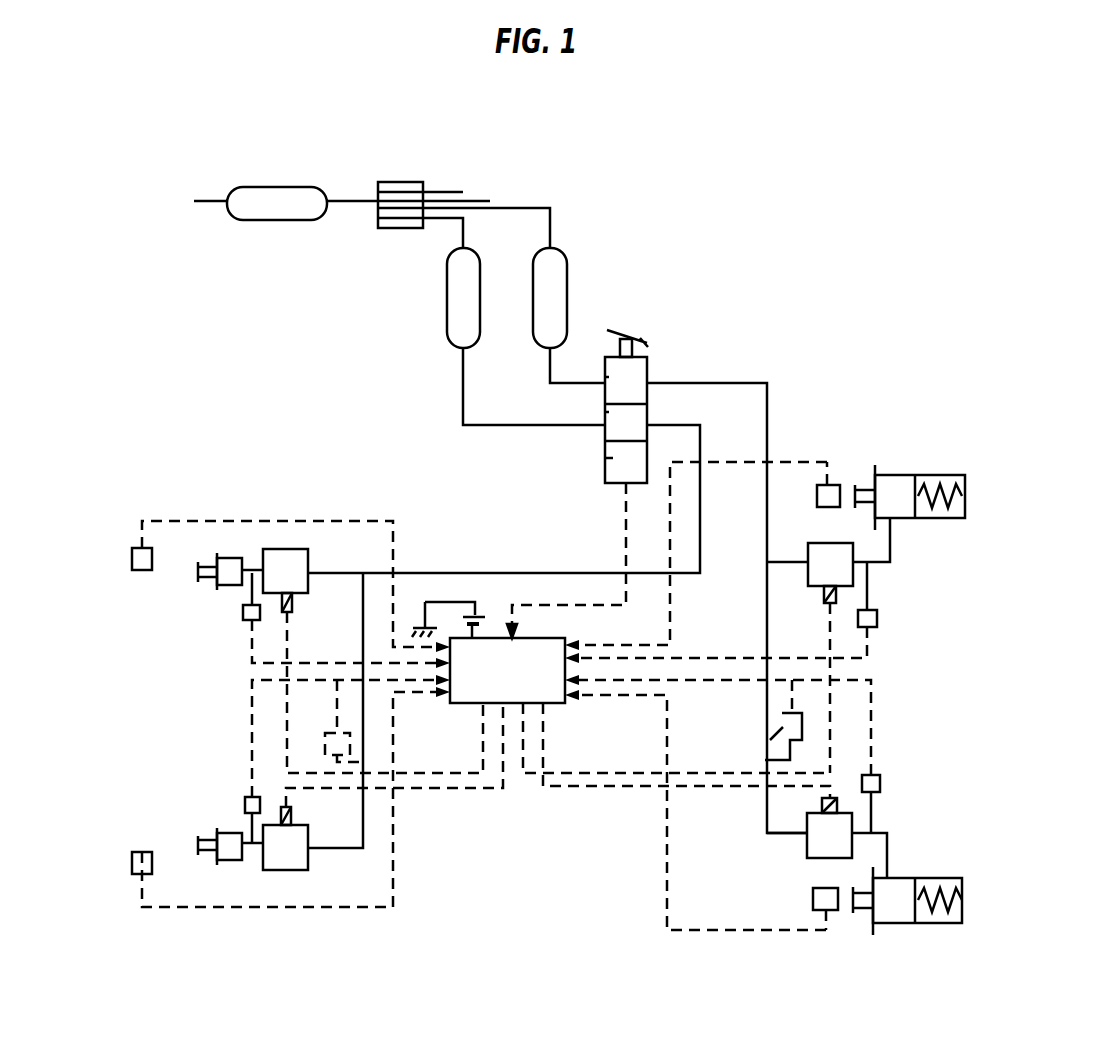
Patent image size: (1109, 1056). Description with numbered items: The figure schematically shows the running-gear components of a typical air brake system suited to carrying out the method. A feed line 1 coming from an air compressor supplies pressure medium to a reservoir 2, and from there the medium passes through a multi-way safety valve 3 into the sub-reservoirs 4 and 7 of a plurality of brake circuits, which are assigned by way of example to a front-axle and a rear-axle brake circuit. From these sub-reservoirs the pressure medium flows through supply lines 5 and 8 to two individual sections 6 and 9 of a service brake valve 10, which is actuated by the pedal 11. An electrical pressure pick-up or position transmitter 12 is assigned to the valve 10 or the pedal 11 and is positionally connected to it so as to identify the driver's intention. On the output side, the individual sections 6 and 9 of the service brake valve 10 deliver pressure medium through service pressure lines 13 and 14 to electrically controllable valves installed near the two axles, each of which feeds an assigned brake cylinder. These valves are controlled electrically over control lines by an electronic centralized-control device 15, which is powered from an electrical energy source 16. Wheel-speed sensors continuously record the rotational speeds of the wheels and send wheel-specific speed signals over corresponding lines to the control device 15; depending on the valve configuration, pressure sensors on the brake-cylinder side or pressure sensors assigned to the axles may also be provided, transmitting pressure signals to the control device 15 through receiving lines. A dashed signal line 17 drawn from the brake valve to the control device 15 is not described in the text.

The feed line 1 is at (220, 201).
The reservoir 2 is at (305, 189).
The multi-way safety valve 3 is at (392, 180).
The sub-reservoir 4 is at (567, 275).
The supply line 5 is at (550, 368).
The individual section 6 is at (605, 380).
The sub-reservoir 7 is at (447, 318).
The supply line 8 is at (463, 404).
The individual section 9 is at (605, 413).
The service brake valve 10 is at (660, 370).
The pedal 11 is at (624, 337).
The position transmitter 12 is at (612, 458).
The service pressure line 13 is at (767, 430).
The service pressure line 14 is at (700, 443).
The electronic centralized-control device 15 is at (466, 703).
The electrical energy source 16 is at (474, 614).
The brake valve signal line 17 is at (626, 532).